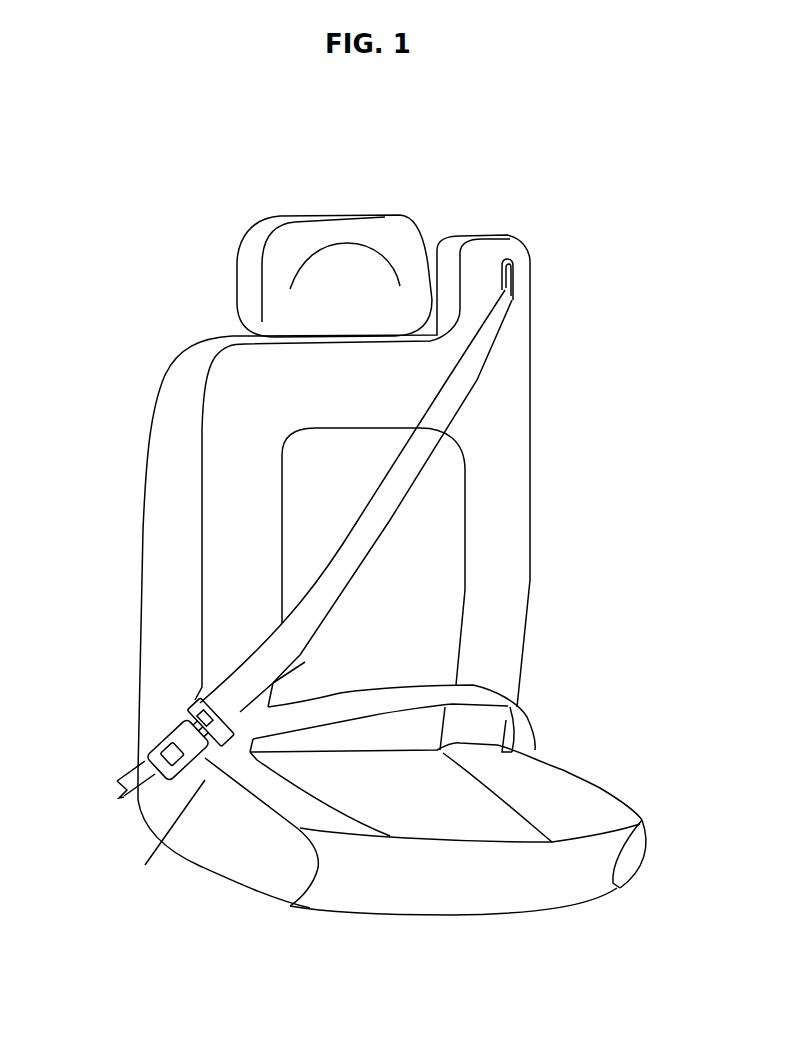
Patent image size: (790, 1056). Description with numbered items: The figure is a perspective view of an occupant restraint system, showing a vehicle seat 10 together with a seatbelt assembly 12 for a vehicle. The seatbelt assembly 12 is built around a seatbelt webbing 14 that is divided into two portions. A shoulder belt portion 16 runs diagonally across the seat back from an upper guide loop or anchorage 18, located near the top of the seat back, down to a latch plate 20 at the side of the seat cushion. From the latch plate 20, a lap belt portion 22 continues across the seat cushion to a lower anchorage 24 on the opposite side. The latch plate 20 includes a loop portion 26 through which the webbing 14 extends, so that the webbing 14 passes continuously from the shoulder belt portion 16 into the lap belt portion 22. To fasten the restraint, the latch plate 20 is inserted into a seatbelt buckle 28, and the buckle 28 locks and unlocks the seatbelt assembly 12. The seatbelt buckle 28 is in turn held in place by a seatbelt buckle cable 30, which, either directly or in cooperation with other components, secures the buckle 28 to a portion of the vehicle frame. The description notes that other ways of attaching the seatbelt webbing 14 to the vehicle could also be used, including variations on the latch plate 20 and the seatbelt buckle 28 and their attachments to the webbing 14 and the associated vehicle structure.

The vehicle seat 10 is at (600, 352).
The seatbelt assembly 12 is at (345, 515).
The seatbelt webbing 14 is at (312, 590).
The shoulder belt portion 16 is at (420, 483).
The upper guide loop or anchorage 18 is at (512, 288).
The latch plate 20 is at (195, 700).
The lap belt portion 22 is at (473, 687).
The lower anchorage 24 is at (537, 750).
The loop portion 26 is at (145, 865).
The seatbelt buckle 28 is at (204, 774).
The seatbelt buckle cable 30 is at (128, 777).